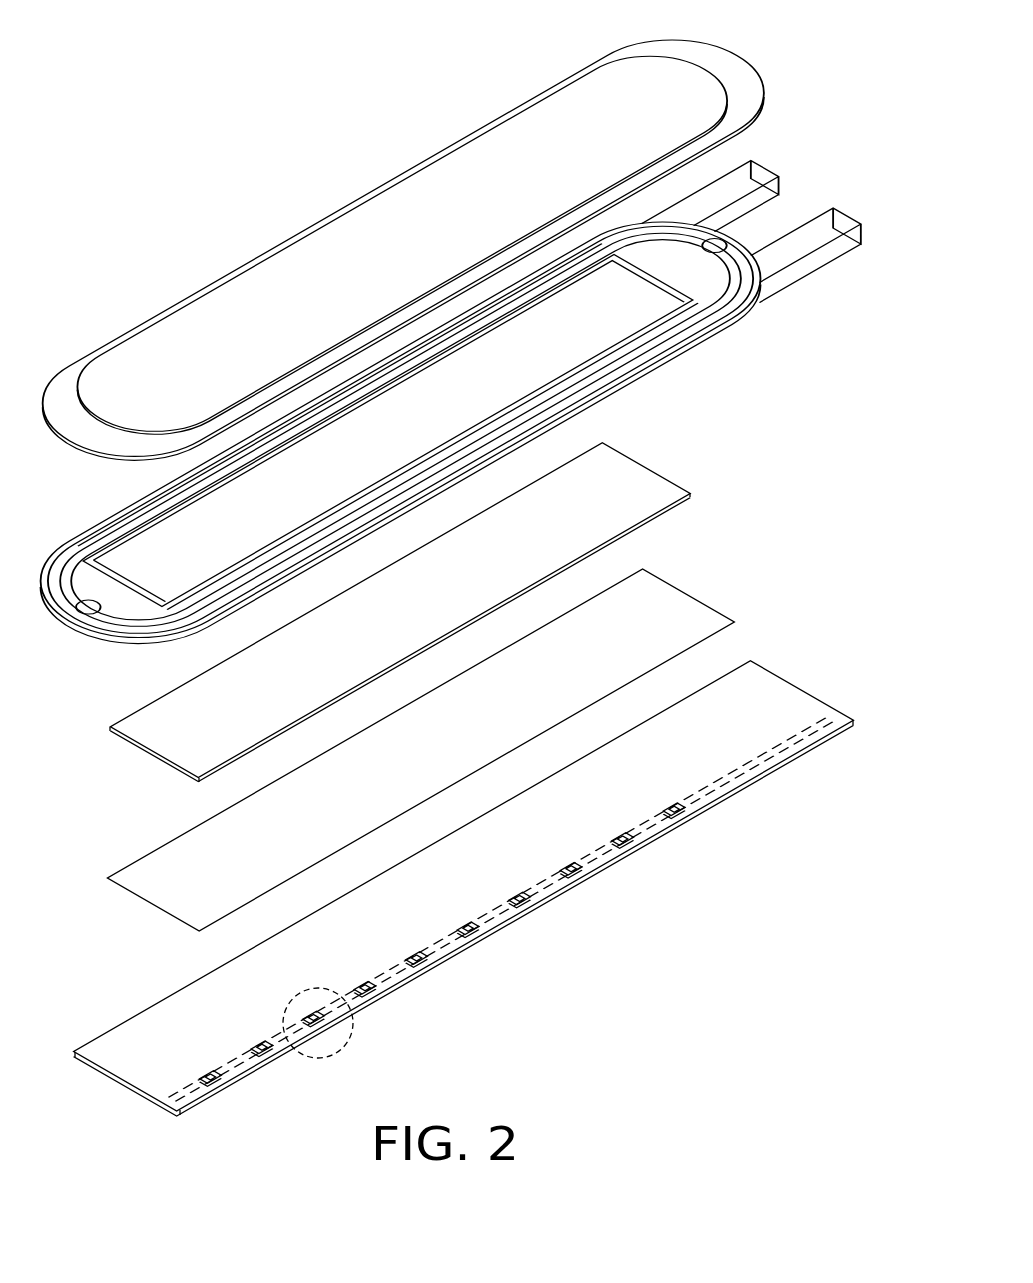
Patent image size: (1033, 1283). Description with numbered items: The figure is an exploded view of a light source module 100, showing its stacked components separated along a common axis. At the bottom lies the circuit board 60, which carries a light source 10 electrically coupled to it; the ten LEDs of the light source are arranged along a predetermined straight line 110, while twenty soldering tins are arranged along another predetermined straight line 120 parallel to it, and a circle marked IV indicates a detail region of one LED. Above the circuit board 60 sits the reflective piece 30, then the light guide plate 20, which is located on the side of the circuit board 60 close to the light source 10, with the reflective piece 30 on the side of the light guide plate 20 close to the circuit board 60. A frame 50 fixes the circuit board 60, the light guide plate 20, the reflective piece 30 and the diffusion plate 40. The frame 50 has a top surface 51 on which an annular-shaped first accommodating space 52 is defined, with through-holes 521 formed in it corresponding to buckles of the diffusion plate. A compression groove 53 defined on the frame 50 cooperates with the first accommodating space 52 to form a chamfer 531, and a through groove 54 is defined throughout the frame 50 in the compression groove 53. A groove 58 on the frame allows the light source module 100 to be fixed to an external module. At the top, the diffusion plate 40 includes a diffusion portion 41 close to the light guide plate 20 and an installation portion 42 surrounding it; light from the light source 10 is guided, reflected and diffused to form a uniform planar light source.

The light source module 100 is at (275, 48).
The light source 10 is at (690, 808).
The light guide plate 20 is at (640, 483).
The reflective piece 30 is at (675, 617).
The diffusion plate 40 is at (403, 244).
The diffusion portion 41 is at (503, 153).
The installation portion 42 is at (700, 52).
The frame 50 is at (437, 447).
The top surface 51 is at (168, 485).
The first accommodating space 52 is at (737, 282).
The through-hole 521 is at (88, 612).
The compression groove 53 is at (98, 583).
The chamfer 531 is at (720, 267).
The through groove 54 is at (537, 370).
The groove 58 is at (768, 215).
The circuit board 60 is at (768, 712).
The predetermined straight line 110 is at (810, 727).
The another predetermined straight line 120 is at (787, 748).
The detail view circle IV is at (343, 1047).